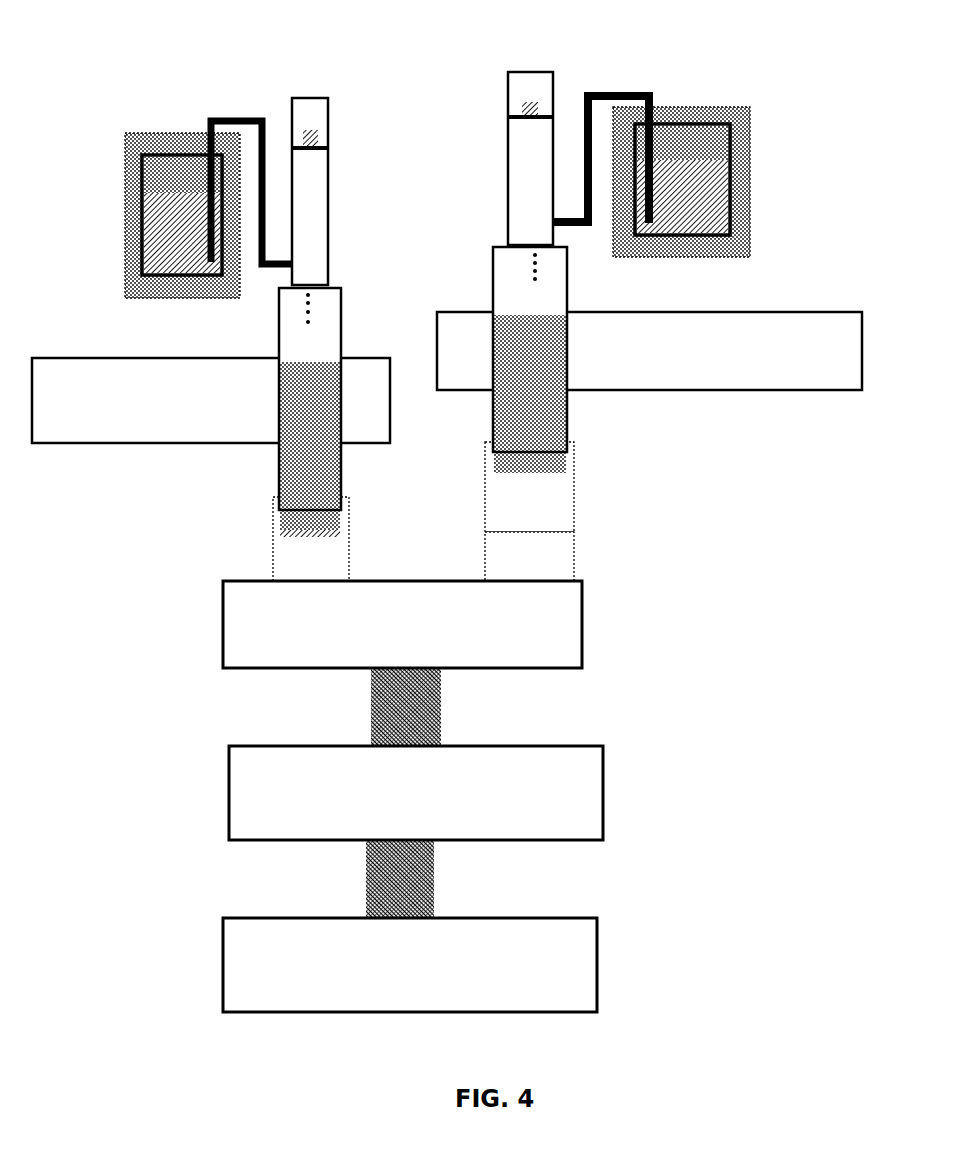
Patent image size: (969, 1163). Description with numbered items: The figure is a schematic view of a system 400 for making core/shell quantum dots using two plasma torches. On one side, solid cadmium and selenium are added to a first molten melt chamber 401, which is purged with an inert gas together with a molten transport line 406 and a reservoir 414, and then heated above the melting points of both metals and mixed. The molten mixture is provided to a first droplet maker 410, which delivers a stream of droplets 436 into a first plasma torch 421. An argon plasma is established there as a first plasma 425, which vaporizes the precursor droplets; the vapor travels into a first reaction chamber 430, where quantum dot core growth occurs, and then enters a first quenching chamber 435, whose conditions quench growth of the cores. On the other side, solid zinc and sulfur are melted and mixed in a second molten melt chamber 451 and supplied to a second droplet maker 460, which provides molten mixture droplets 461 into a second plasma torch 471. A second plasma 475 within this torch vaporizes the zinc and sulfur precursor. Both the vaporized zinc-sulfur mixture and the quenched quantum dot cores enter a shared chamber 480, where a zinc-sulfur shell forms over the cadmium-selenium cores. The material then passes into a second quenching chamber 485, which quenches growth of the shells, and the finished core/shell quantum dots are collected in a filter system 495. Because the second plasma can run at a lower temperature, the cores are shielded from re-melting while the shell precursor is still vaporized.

The system 400 is at (195, 62).
The first molten melt chamber 401 is at (765, 145).
The molten transport line 406 is at (615, 88).
The first droplet maker 410 is at (491, 158).
The reservoir 414 is at (507, 199).
The first plasma torch 421 is at (793, 305).
The first plasma 425 is at (492, 418).
The first reaction chamber 430 is at (578, 493).
The first quenching chamber 435 is at (578, 575).
The stream of droplets 436 is at (495, 360).
The second molten melt chamber 451 is at (110, 162).
The second droplet maker 460 is at (335, 190).
The molten mixture droplets 461 is at (317, 313).
The second plasma torch 471 is at (122, 352).
The second plasma 475 is at (270, 482).
The chamber 480 is at (210, 638).
The second quenching chamber 485 is at (222, 822).
The filter system 495 is at (222, 967).